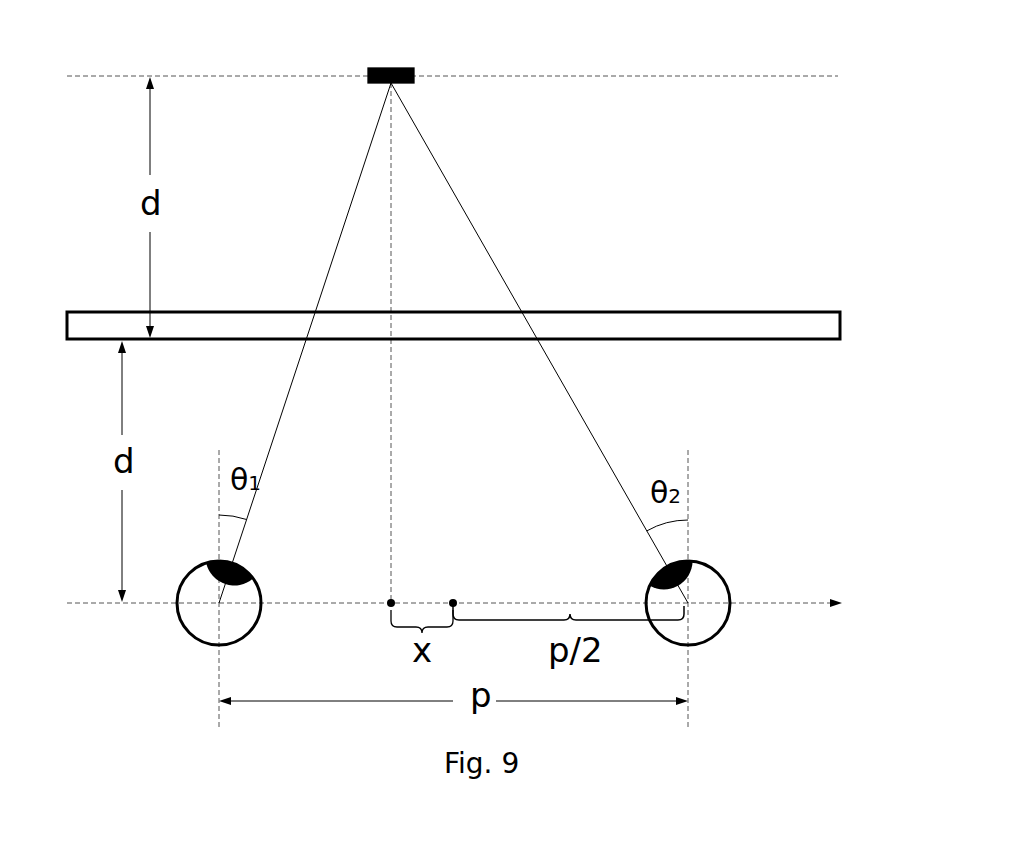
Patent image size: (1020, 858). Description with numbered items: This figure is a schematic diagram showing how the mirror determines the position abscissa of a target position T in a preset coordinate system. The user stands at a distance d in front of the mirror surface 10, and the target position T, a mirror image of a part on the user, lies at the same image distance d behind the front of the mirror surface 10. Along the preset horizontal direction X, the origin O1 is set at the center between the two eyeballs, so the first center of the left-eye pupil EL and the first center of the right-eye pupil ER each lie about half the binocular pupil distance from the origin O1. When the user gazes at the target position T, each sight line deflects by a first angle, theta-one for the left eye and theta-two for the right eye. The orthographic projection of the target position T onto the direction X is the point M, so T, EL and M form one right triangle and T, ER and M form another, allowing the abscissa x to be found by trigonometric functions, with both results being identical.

The mirror surface 10 is at (714, 341).
The target position T is at (391, 52).
The preset horizontal direction X is at (472, 603).
The first center of the left-eye pupil EL is at (219, 603).
The first center of the right-eye pupil ER is at (688, 603).
The orthographic projection position M is at (372, 581).
The origin of the preset coordinate system O1 is at (453, 581).